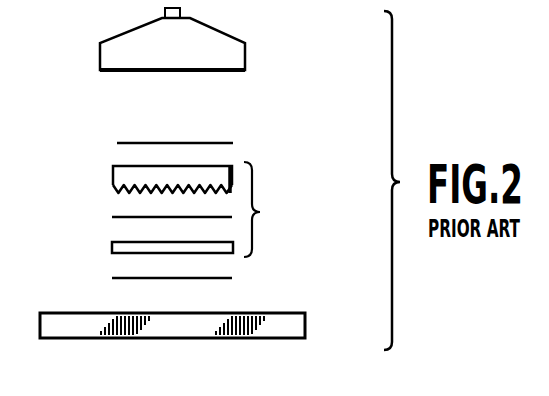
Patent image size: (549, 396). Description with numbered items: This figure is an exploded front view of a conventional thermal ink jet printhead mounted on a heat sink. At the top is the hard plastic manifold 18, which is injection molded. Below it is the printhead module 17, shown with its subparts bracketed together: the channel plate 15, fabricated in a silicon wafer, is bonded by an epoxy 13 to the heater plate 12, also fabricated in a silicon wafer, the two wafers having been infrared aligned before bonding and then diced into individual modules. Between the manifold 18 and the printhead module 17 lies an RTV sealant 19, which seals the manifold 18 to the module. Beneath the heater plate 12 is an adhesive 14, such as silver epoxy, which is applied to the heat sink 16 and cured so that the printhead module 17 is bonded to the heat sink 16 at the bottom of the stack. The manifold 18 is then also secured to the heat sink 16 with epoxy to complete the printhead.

The heater plate 12 is at (112, 247).
The epoxy 13 is at (112, 217).
The adhesive 14 is at (112, 278).
The channel plate 15 is at (113, 177).
The heat sink 16 is at (305, 325).
The printhead module 17 is at (265, 209).
The manifold 18 is at (245, 58).
The RTV sealant 19 is at (117, 143).